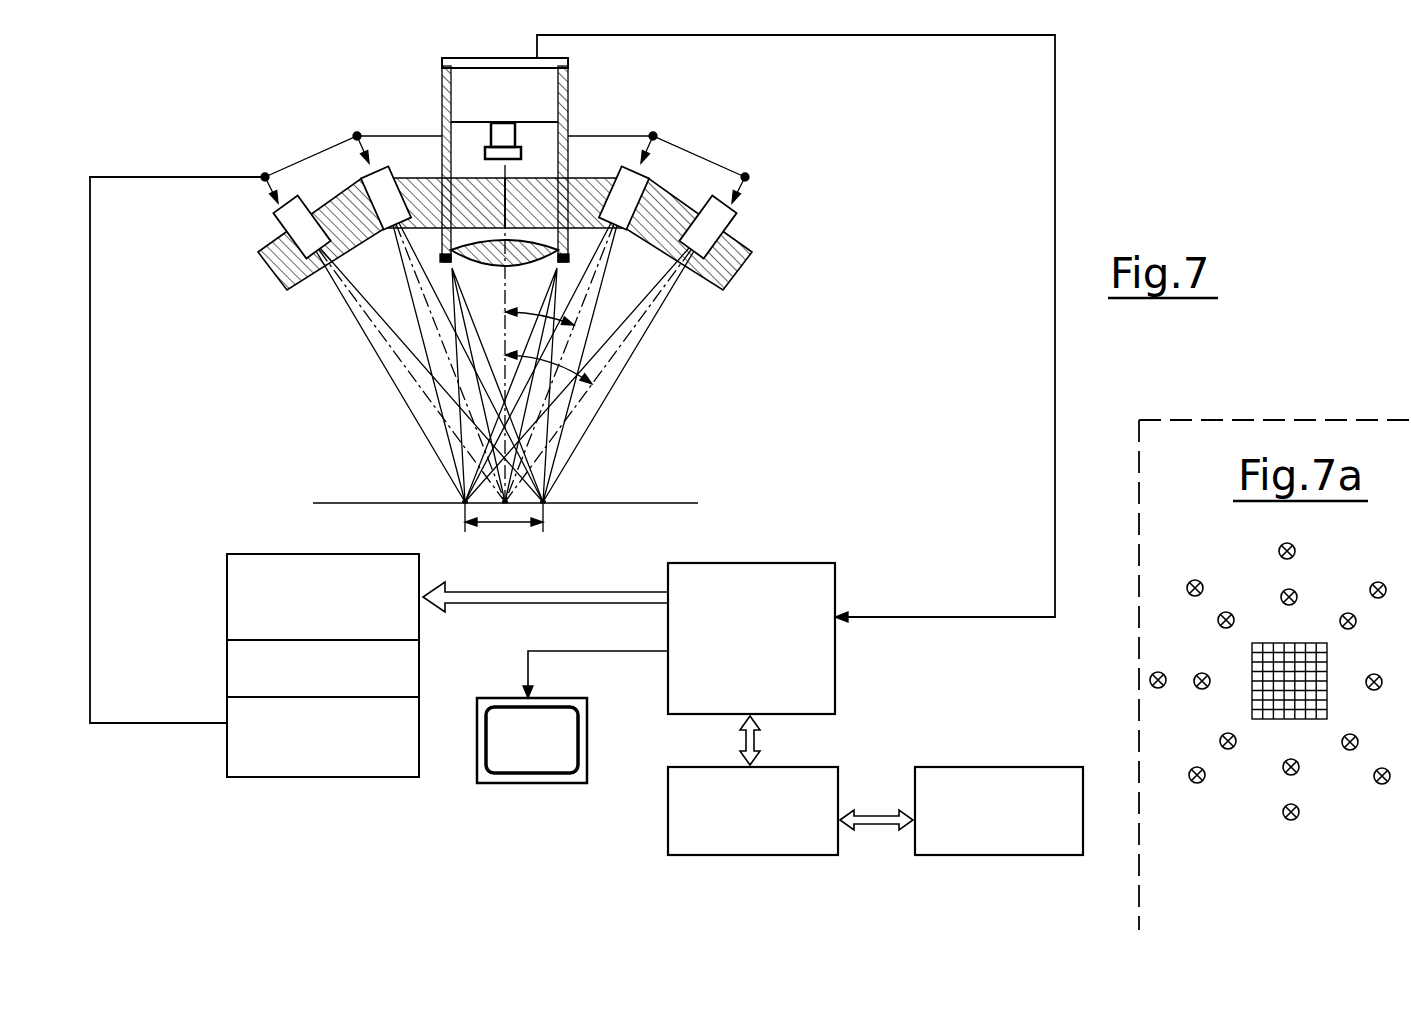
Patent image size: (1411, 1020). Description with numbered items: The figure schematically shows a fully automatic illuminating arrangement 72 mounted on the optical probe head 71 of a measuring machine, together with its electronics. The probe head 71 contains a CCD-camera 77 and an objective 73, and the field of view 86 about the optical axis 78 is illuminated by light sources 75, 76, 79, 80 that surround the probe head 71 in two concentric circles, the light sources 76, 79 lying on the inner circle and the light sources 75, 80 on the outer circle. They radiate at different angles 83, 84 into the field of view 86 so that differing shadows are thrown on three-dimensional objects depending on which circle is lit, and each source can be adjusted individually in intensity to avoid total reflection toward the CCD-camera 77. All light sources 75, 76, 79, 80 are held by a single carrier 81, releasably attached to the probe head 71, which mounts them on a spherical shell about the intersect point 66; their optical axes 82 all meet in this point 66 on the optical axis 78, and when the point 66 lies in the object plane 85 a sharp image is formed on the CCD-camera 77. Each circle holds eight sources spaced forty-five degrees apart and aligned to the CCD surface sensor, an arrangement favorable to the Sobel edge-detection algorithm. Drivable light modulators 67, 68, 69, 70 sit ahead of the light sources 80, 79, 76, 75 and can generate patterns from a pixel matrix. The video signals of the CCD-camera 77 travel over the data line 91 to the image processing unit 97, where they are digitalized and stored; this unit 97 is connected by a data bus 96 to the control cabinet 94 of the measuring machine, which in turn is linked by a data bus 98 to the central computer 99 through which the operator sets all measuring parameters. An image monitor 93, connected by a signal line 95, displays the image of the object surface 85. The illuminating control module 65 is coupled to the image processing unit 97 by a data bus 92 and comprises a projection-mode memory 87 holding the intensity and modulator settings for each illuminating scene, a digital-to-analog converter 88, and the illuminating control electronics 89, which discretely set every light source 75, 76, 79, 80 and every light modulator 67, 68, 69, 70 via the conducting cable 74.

The illuminating control module 65 is at (285, 686).
The intersect point 66 is at (465, 504).
The light modulator 67 is at (655, 265).
The light modulator 68 is at (623, 232).
The light modulator 69 is at (392, 232).
The light modulator 70 is at (341, 256).
The optical probe head 71 is at (510, 150).
The illuminating arrangement 72 is at (653, 253).
The objective 73 is at (517, 243).
The conducting cable 74 is at (140, 177).
The light source 75 is at (280, 212).
The light source 76 is at (350, 143).
The CCD-camera 77 is at (566, 98).
The optical axis 78 is at (508, 175).
The light source 79 is at (688, 156).
The light source 80 is at (722, 223).
The carrier 81 is at (747, 243).
The optical axes of the light sources 82 is at (637, 343).
The angle 83 is at (545, 318).
The angle 84 is at (548, 364).
The object plane 85 is at (645, 503).
The field of view 86 is at (507, 522).
The projection-mode memory 87 is at (227, 597).
The digital-to-analog converter 88 is at (230, 656).
The illuminating control electronics 89 is at (230, 712).
The data line 91 is at (1056, 166).
The data bus 92 is at (467, 596).
The image monitor 93 is at (528, 783).
The control cabinet 94 is at (668, 820).
The signal line 95 is at (588, 652).
The data bus 96 is at (758, 740).
The image processing unit 97 is at (820, 660).
The data bus 98 is at (875, 795).
The central computer 99 is at (1070, 818).